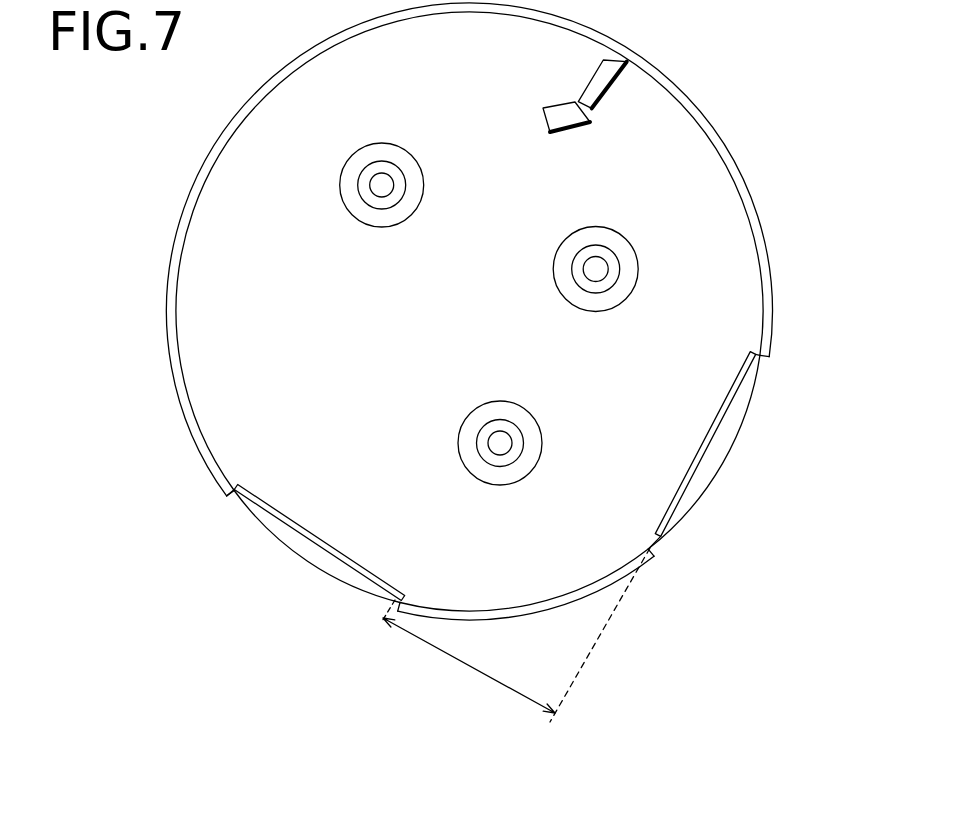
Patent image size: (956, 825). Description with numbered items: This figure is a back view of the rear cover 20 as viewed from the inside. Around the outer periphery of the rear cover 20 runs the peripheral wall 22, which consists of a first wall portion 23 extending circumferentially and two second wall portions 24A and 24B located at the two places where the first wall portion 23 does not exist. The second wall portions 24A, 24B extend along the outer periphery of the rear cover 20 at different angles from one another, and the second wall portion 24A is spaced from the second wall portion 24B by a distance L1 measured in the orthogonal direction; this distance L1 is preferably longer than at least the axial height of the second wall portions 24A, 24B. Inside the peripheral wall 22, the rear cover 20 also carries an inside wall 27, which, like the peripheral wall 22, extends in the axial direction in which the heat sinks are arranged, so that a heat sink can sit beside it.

The rear cover 20 is at (748, 91).
The peripheral wall 22 is at (185, 204).
The first wall portion 23 is at (655, 560).
The second wall portion 24A is at (703, 452).
The second wall portion 24B is at (253, 497).
The inside wall 27 is at (602, 102).
The distance L1 is at (515, 635).